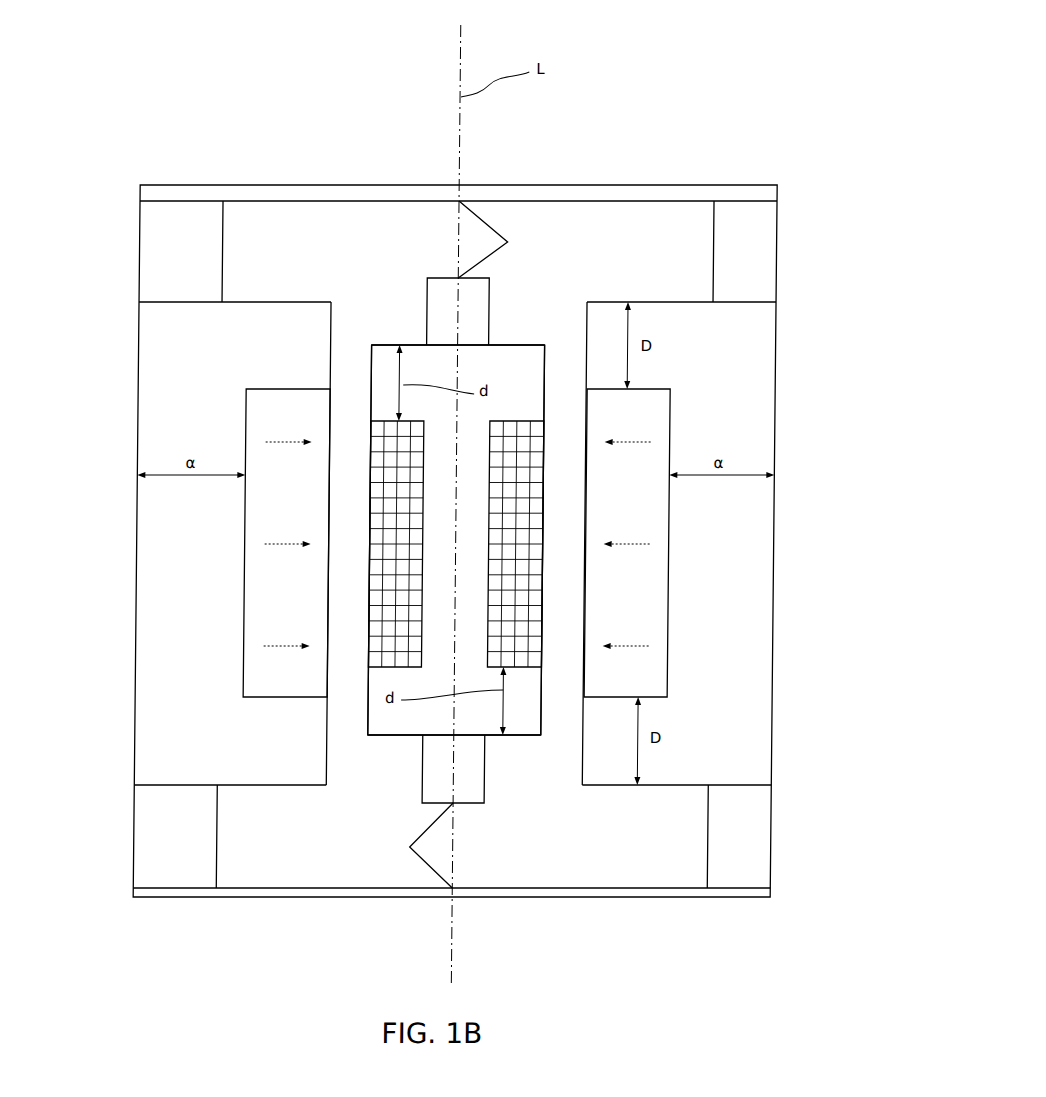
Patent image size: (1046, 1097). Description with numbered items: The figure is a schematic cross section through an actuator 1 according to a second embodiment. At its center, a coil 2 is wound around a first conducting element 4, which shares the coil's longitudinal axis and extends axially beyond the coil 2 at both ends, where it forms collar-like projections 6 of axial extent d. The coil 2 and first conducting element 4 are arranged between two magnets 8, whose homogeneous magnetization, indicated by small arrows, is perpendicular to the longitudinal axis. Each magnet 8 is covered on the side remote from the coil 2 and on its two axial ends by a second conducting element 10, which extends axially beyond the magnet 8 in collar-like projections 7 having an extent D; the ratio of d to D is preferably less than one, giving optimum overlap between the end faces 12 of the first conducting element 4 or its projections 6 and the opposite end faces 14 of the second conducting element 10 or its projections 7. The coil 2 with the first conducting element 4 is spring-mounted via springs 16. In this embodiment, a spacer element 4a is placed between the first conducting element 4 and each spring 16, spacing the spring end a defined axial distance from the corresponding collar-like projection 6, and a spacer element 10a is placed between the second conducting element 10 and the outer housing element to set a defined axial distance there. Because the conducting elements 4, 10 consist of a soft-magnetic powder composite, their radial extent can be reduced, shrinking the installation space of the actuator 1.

The actuator 1 is at (714, 112).
The coil 2 is at (391, 600).
The first conducting element 4 is at (444, 516).
The spacer element 4a is at (443, 306).
The collar-like projections 6 is at (384, 362).
The collar-like projections 7 is at (208, 336).
The magnet 8 is at (282, 414).
The second conducting element 10 is at (172, 680).
The spacer element 10a is at (168, 250).
The end faces 12 is at (375, 386).
The end faces 14 is at (334, 367).
The springs 16 is at (495, 222).